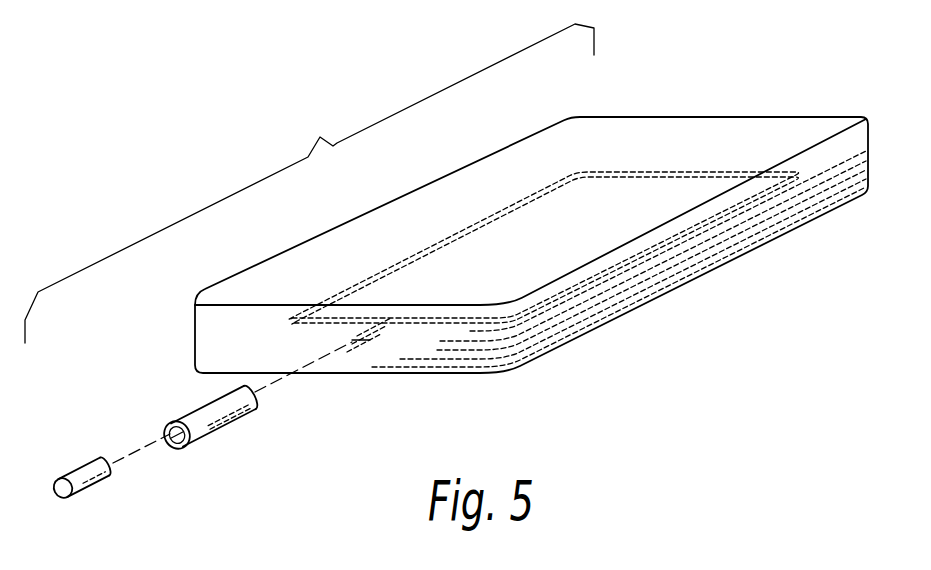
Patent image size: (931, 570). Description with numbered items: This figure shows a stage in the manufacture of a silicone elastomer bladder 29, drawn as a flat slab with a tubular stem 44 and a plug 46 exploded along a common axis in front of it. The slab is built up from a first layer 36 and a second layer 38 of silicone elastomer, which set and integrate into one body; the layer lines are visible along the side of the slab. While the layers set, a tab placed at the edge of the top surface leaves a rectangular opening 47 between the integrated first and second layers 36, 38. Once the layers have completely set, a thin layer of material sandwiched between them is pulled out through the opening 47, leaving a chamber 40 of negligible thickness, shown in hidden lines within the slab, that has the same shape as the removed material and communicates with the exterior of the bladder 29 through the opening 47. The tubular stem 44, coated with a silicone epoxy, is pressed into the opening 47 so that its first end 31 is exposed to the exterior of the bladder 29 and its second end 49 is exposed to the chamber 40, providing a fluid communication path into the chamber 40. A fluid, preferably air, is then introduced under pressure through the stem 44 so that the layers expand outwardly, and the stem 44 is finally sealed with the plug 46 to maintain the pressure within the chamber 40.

The bladder 29 is at (446, 198).
The first end 31 is at (188, 447).
The first layer 36 is at (833, 208).
The second layer 38 is at (849, 120).
The chamber 40 is at (590, 237).
The tubular stem 44 is at (193, 412).
The plug 46 is at (80, 470).
The opening 47 is at (370, 340).
The second end 49 is at (253, 413).